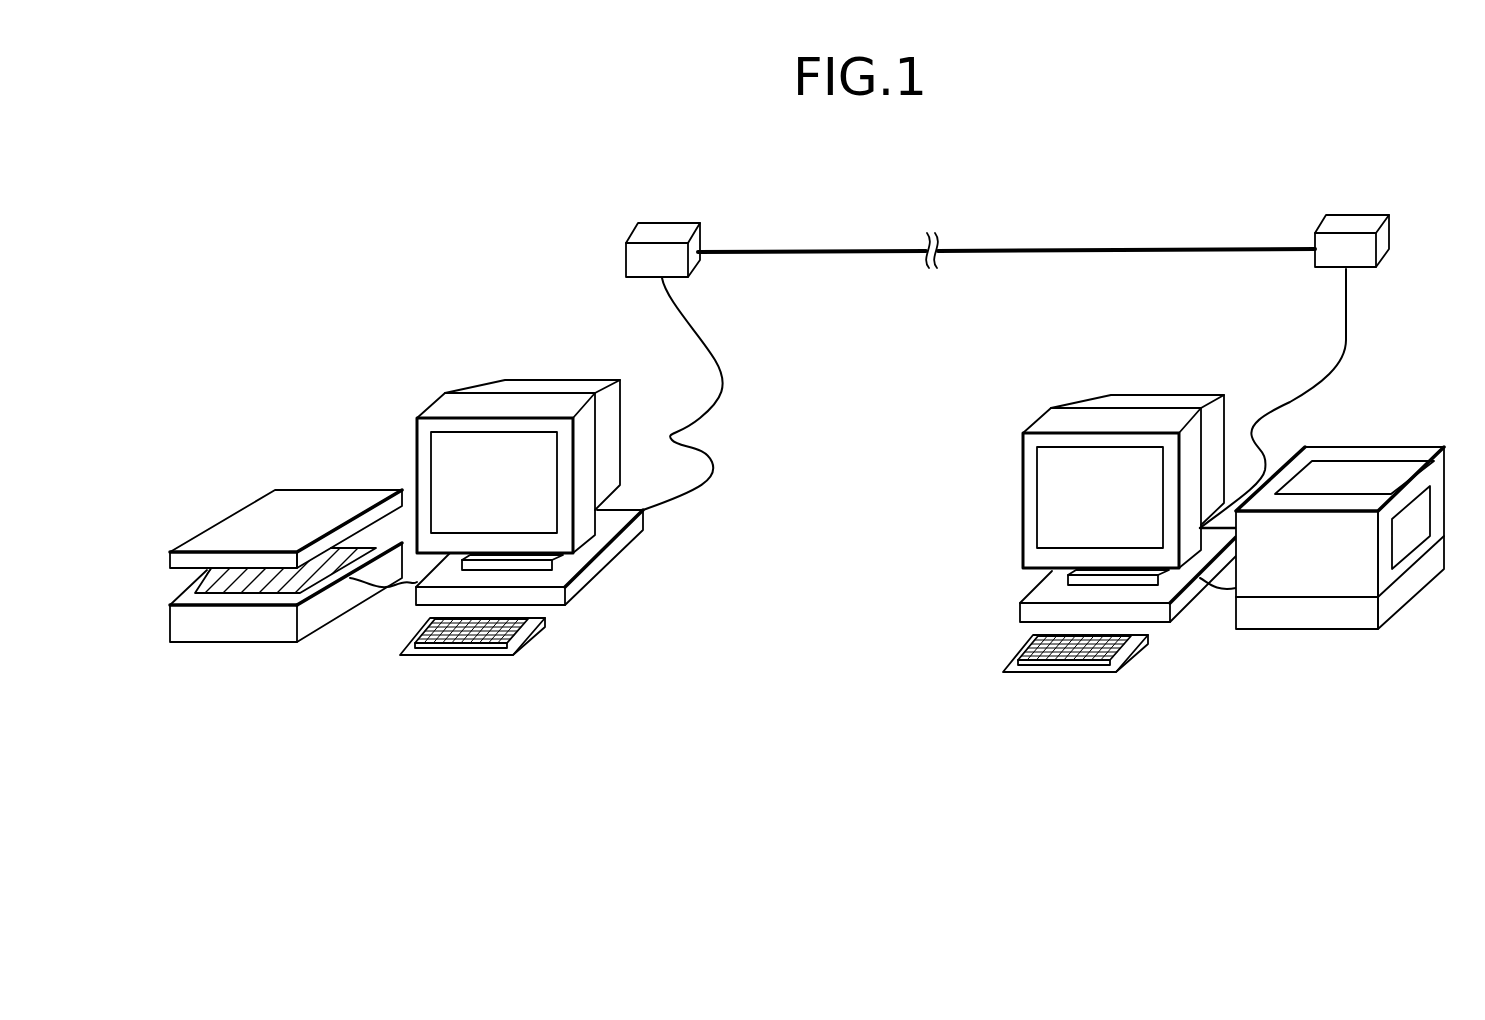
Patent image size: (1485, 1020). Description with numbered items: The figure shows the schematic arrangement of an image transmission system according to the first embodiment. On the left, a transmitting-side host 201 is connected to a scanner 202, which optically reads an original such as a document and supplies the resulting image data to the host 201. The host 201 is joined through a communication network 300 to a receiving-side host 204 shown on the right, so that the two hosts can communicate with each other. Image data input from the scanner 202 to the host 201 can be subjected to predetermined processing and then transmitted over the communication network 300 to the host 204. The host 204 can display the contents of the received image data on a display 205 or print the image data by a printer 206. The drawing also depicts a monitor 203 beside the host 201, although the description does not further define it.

The transmitting-side host 201 is at (605, 560).
The scanner 202 is at (307, 500).
The display monitor 203 is at (468, 403).
The receiving-side host 204 is at (1033, 587).
The display 205 is at (1072, 417).
The printer 206 is at (1407, 447).
The communication network 300 is at (782, 250).